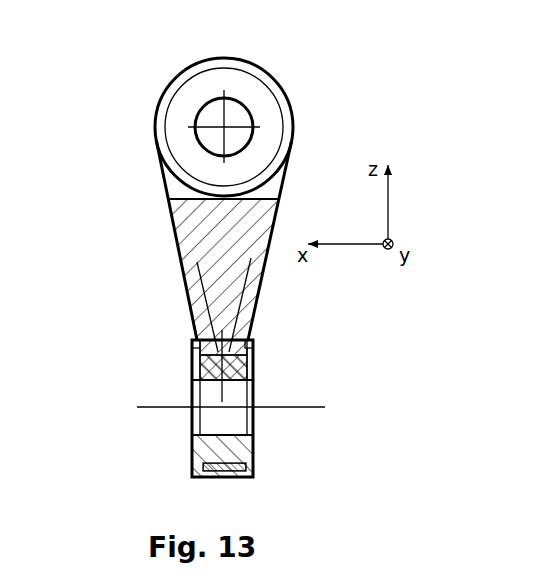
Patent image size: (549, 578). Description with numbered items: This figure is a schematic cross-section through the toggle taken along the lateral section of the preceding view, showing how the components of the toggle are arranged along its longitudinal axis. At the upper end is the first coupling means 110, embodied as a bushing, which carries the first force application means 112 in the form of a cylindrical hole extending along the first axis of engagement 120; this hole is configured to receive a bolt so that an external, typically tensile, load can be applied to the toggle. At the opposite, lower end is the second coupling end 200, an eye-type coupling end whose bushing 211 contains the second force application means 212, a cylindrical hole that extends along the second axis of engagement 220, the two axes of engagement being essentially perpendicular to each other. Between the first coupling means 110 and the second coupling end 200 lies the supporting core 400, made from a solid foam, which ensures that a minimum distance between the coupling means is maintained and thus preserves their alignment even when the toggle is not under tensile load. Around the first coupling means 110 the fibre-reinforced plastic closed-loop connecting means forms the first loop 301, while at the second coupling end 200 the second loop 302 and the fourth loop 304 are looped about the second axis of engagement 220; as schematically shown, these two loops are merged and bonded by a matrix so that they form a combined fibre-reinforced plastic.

The first coupling means 110 is at (214, 58).
The first force application means 112 is at (153, 126).
The first axis of engagement 120 is at (150, 84).
The second coupling end 200 is at (150, 408).
The bushing 211 is at (252, 390).
The second force application means 212 is at (301, 447).
The second axis of engagement 220 is at (186, 385).
The first loop 301 is at (288, 100).
The second loop 302 is at (147, 339).
The fourth loop 304 is at (305, 348).
The supporting core 400 is at (173, 250).